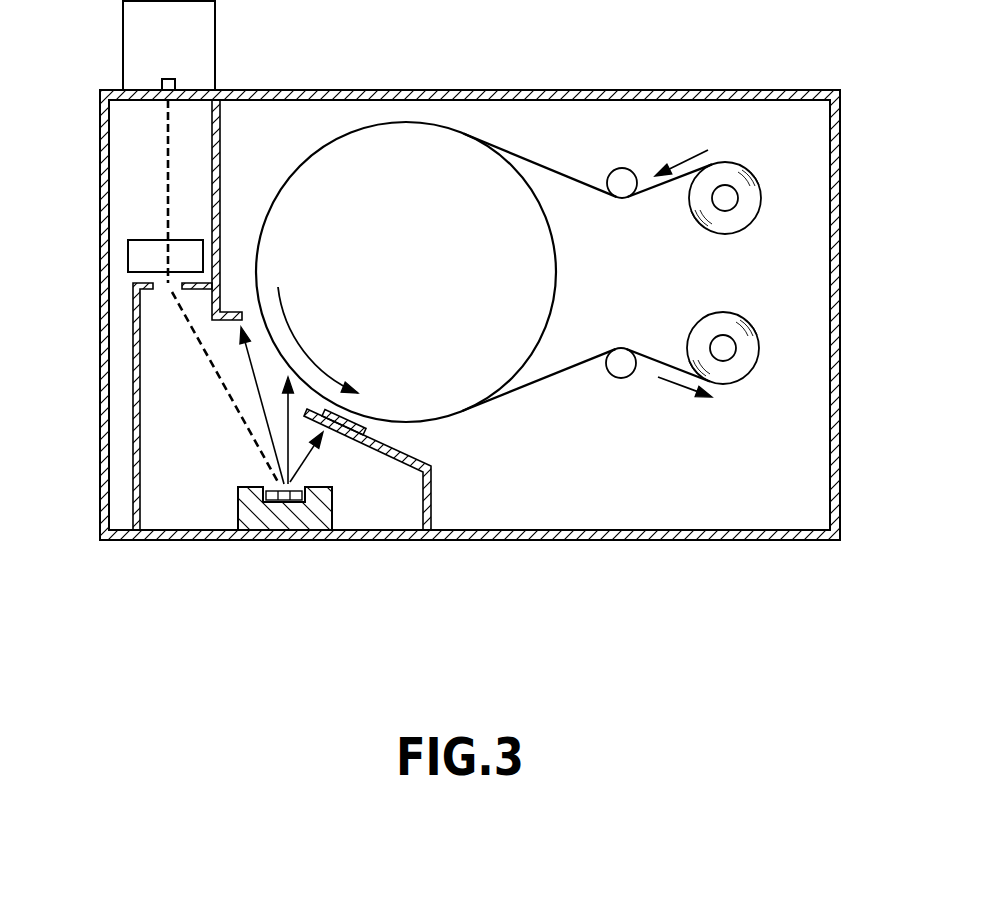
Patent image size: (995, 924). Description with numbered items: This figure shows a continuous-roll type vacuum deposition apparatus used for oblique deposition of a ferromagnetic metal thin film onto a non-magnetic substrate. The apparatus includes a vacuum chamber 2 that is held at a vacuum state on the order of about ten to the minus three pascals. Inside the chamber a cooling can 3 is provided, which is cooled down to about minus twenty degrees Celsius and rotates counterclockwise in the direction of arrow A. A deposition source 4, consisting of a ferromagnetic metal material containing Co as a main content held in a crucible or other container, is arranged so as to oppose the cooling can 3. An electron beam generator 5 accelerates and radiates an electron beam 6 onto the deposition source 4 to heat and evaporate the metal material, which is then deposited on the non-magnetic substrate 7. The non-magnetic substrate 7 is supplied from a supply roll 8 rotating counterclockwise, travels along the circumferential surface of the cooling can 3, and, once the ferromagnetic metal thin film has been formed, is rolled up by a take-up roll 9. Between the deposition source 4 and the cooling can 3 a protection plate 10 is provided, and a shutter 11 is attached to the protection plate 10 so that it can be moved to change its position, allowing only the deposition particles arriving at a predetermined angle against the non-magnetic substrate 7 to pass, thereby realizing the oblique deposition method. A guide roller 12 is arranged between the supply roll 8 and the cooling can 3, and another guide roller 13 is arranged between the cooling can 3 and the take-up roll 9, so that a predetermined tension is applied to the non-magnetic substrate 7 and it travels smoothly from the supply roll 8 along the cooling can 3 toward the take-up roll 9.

The vacuum chamber 2 is at (614, 500).
The cooling can 3 is at (410, 148).
The deposition source 4 is at (273, 498).
The electron beam generator 5 is at (197, 46).
The electron beam 6 is at (168, 150).
The non-magnetic substrate 7 is at (525, 155).
The supply roll 8 is at (747, 205).
The take-up roll 9 is at (743, 358).
The protection plate 10 is at (417, 462).
The shutter 11 is at (347, 445).
The guide roller 12 is at (622, 180).
The guide roller 13 is at (620, 380).